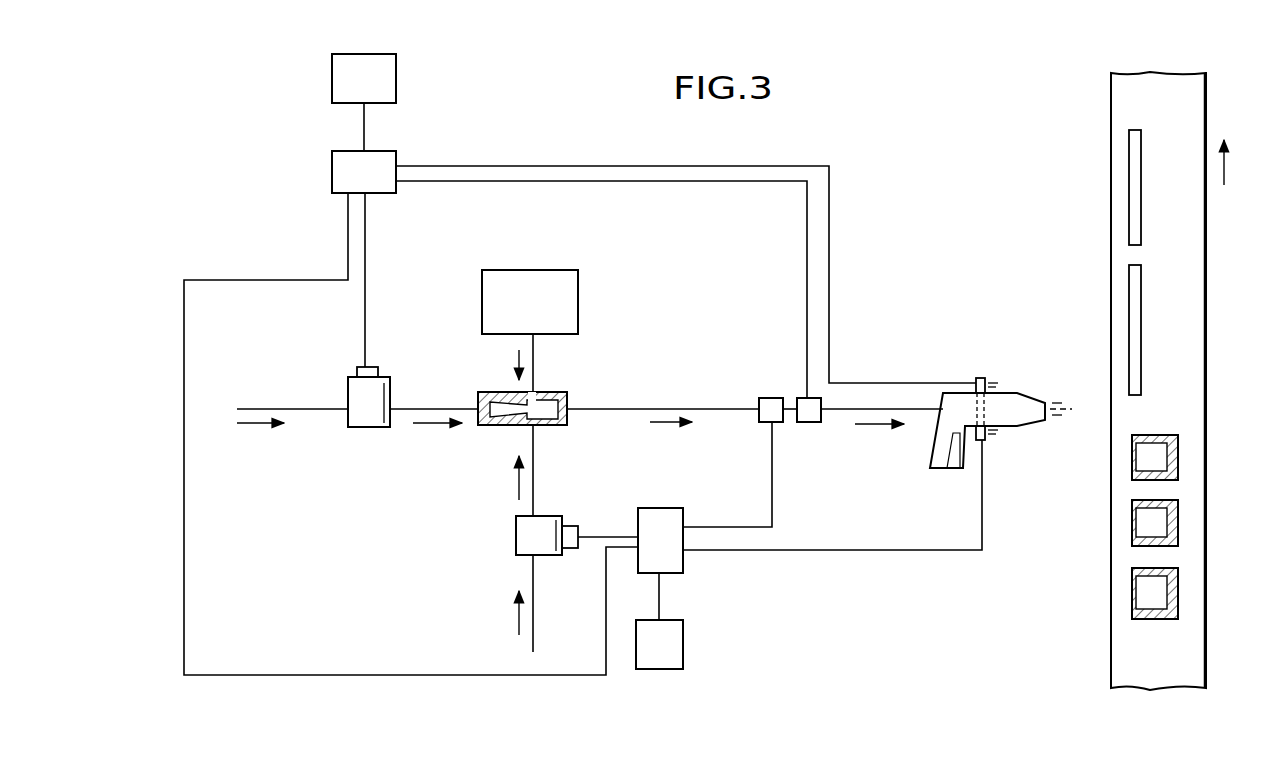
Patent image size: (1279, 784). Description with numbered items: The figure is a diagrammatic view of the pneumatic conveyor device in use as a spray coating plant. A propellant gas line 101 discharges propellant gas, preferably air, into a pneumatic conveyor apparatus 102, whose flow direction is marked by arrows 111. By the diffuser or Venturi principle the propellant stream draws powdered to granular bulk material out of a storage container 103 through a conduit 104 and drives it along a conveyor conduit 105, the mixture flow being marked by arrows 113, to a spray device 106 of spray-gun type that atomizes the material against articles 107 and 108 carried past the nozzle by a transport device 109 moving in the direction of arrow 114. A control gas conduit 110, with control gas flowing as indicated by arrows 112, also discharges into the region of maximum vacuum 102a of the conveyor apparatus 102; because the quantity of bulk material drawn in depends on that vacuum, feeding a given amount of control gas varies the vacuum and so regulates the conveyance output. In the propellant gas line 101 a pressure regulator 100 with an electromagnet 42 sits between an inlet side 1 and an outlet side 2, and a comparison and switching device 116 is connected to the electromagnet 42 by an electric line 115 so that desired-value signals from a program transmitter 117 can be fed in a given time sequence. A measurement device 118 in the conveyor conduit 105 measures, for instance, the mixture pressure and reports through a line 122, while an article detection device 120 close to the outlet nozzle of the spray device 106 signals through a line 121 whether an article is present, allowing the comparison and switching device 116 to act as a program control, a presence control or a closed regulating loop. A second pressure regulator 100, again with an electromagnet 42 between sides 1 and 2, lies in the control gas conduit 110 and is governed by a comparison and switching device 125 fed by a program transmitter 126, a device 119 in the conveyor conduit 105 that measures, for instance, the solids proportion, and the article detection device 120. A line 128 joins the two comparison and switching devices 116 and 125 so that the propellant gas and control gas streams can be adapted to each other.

The inlet side of valve 1 is at (348, 408).
The outlet side of valve 2 is at (392, 408).
The electromagnet 42 is at (357, 369).
The pressure regulator 100 is at (372, 420).
The propellant gas line 101 is at (302, 409).
The pneumatic conveyor apparatus 102 is at (549, 433).
The region of maximum vacuum 102a is at (548, 424).
The storage container 103 is at (545, 314).
The conduit 104 is at (533, 367).
The conveyor conduit 105 is at (636, 409).
The spray device 106 is at (942, 452).
The article 107 is at (1141, 240).
The article 108 is at (1178, 465).
The transport device 109 is at (1206, 342).
The control gas conduit 110 is at (533, 506).
The arrows 111 is at (250, 424).
The arrows 112 is at (519, 492).
The arrows 113 is at (668, 424).
The arrow 114 is at (1224, 173).
The electric line 115 is at (365, 325).
The comparison and switching device 116 is at (379, 183).
The program transmitter 117 is at (379, 90).
The measurement device 118 is at (805, 398).
The device 119 is at (759, 400).
The article detection device 120 is at (980, 378).
The line 121 is at (829, 250).
The line 122 is at (807, 250).
The comparison and switching device 125 is at (680, 565).
The program transmitter 126 is at (683, 650).
The line 128 is at (282, 675).